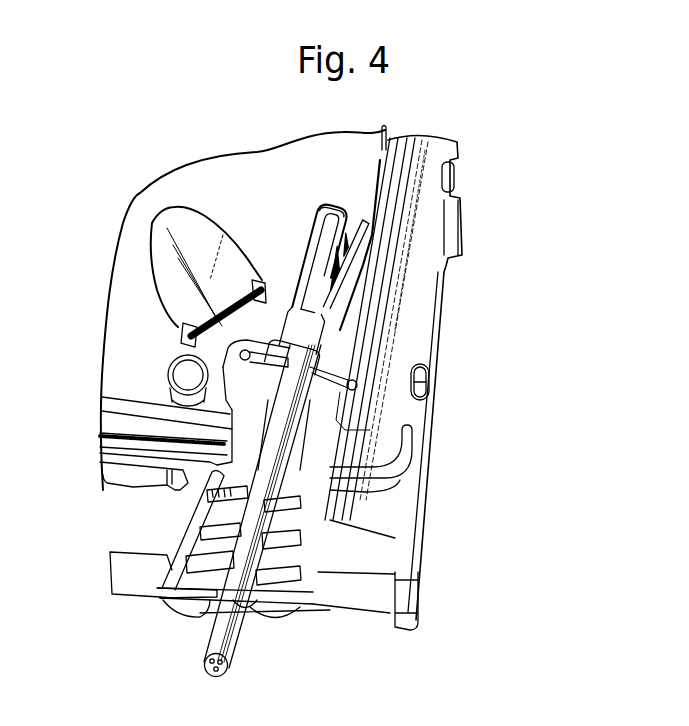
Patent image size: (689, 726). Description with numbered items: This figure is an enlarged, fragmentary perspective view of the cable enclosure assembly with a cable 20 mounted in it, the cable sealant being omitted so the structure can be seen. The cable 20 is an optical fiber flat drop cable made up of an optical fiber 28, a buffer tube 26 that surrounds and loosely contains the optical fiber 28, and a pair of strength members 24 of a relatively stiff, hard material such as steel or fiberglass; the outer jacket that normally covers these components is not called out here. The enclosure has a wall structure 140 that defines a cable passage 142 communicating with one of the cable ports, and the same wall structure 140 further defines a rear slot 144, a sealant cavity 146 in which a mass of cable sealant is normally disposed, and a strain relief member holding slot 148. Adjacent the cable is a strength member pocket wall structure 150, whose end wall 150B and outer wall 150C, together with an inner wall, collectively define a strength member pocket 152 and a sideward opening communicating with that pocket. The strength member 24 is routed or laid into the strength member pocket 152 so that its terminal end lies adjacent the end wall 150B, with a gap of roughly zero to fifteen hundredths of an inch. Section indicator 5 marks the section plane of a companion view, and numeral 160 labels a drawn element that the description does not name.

The section line 5- 5 is at (353, 212).
The cable 20 is at (229, 653).
The strength member 24 is at (320, 296).
The buffer tube 26 is at (350, 247).
The optical fiber 28 is at (386, 130).
The wall structure 140 is at (221, 361).
The cable passage 142 is at (264, 432).
The rear slot 144 is at (284, 530).
The sealant cavity 146 is at (355, 447).
The strain relief member holding slot 148 is at (356, 381).
The strength member pocket wall structure 150 is at (299, 244).
The end wall 150B is at (325, 208).
The outer wall 150C is at (345, 255).
The strength member pocket 152 is at (355, 210).
The lever arm 160 is at (196, 300).